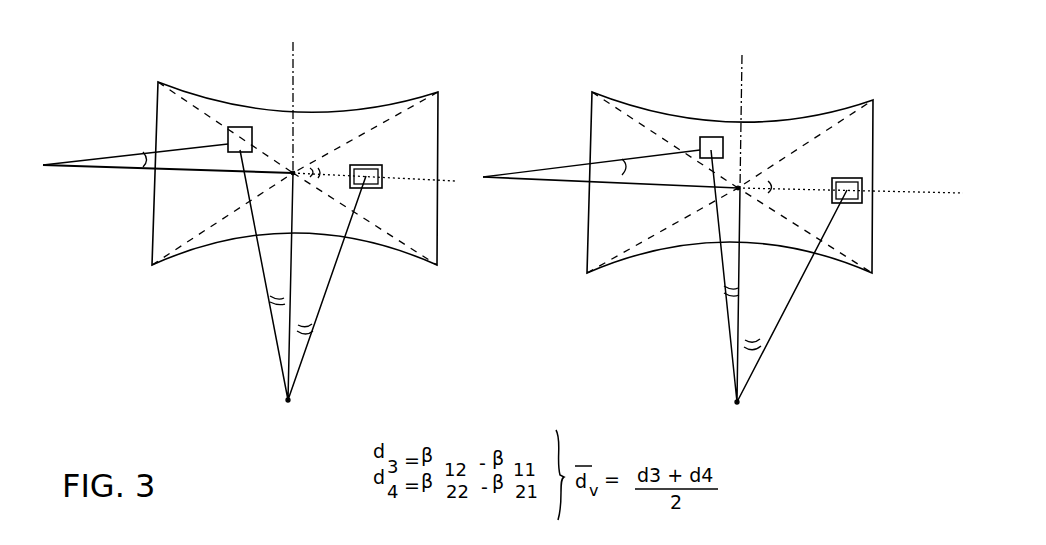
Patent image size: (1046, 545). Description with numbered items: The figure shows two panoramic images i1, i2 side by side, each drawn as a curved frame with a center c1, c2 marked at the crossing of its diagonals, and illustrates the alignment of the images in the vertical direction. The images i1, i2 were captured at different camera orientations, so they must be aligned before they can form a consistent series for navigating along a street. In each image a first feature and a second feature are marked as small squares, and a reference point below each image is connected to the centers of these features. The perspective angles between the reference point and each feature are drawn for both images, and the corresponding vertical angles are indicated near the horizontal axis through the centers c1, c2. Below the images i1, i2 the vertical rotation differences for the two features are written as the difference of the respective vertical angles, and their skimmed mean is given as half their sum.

The first panoramic image i1 is at (203, 97).
The second panoramic image i2 is at (648, 118).
The center of first image c1 is at (293, 173).
The center of second image c2 is at (738, 188).